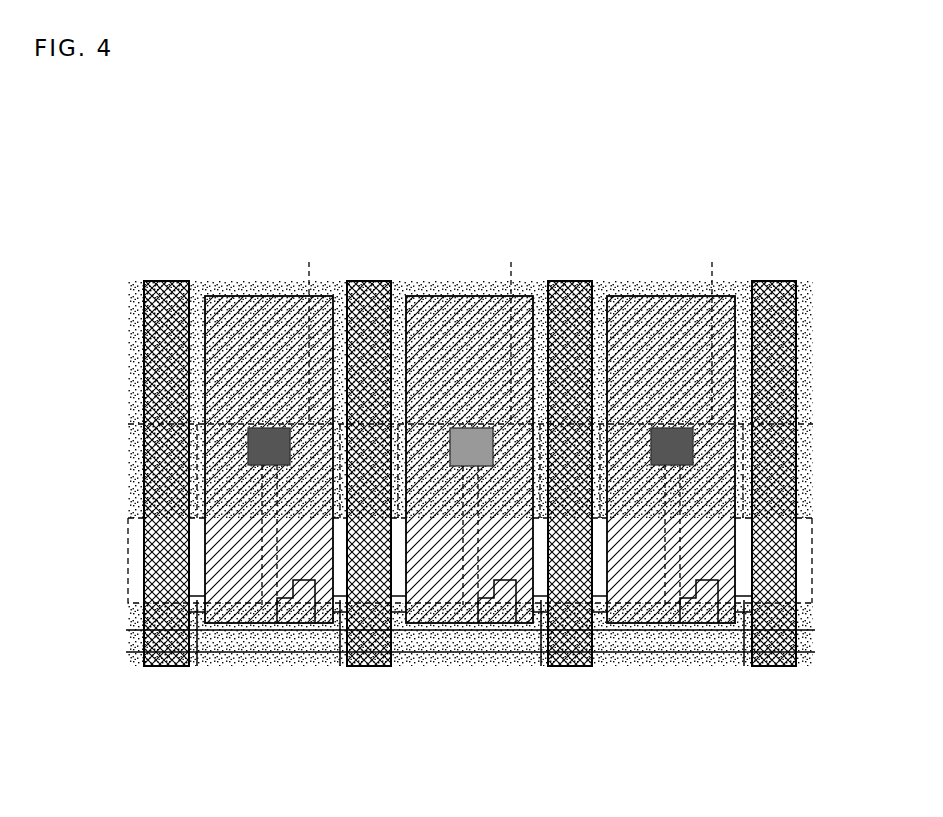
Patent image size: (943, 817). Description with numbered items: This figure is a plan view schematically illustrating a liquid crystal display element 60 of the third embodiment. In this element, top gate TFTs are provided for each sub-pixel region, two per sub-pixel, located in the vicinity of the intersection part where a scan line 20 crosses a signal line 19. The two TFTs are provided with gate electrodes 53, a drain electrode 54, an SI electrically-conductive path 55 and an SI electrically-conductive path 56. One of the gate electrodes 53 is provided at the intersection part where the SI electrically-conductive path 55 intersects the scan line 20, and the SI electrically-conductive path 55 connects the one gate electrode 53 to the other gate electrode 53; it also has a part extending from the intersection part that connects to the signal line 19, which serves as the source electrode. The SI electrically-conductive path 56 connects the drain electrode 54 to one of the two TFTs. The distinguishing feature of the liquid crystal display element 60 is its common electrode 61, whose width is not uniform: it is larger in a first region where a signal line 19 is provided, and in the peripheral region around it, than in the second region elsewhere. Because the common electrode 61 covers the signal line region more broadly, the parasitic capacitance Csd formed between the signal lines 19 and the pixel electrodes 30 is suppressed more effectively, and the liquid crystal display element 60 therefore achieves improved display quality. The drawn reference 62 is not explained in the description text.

The liquid crystal display element 60 is at (770, 222).
The common electrode 61 is at (197, 281).
The pixel electrode 30 is at (251, 296).
The second insulating layer 62 is at (470, 330).
The signal line 19 is at (367, 281).
The drain electrode 54 is at (248, 446).
The SI electrically-conductive path 56 is at (262, 556).
The gate electrode 53 is at (293, 652).
The SI electrically-conductive path 55 is at (340, 652).
The scan line 20 is at (627, 640).